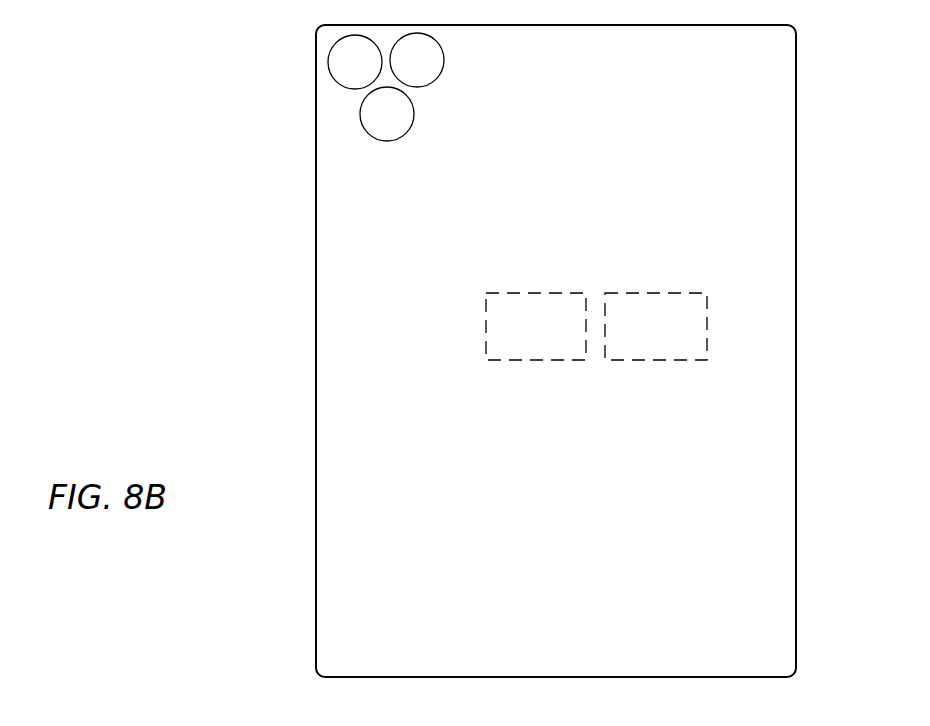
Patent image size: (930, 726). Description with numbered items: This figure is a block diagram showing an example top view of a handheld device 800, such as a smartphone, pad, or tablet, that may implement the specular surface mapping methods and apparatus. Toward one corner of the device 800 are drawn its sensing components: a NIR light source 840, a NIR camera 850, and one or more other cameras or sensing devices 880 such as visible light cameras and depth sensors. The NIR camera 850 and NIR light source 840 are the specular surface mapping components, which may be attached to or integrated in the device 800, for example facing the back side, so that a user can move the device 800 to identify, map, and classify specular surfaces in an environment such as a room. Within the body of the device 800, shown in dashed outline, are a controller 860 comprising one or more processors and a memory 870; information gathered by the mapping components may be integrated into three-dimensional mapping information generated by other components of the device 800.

The handheld device 800 is at (316, 205).
The NIR light source 840 is at (371, 71).
The NIR camera 850 is at (433, 69).
The other cameras or sensing devices 880 is at (403, 123).
The controller 860 is at (551, 334).
The memory 870 is at (671, 334).